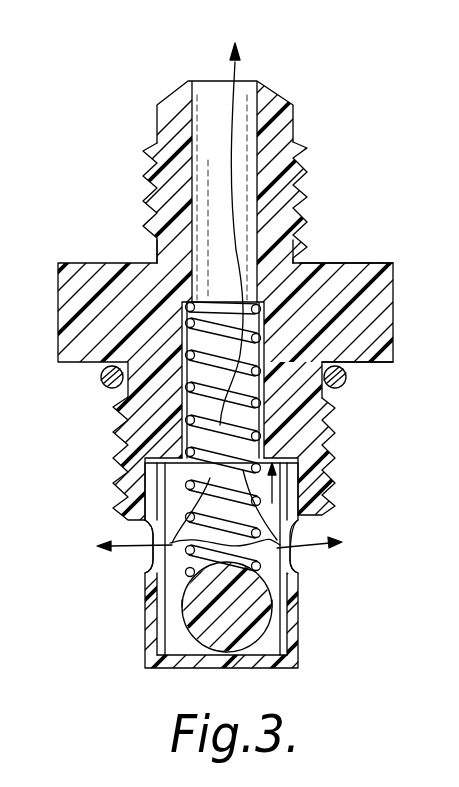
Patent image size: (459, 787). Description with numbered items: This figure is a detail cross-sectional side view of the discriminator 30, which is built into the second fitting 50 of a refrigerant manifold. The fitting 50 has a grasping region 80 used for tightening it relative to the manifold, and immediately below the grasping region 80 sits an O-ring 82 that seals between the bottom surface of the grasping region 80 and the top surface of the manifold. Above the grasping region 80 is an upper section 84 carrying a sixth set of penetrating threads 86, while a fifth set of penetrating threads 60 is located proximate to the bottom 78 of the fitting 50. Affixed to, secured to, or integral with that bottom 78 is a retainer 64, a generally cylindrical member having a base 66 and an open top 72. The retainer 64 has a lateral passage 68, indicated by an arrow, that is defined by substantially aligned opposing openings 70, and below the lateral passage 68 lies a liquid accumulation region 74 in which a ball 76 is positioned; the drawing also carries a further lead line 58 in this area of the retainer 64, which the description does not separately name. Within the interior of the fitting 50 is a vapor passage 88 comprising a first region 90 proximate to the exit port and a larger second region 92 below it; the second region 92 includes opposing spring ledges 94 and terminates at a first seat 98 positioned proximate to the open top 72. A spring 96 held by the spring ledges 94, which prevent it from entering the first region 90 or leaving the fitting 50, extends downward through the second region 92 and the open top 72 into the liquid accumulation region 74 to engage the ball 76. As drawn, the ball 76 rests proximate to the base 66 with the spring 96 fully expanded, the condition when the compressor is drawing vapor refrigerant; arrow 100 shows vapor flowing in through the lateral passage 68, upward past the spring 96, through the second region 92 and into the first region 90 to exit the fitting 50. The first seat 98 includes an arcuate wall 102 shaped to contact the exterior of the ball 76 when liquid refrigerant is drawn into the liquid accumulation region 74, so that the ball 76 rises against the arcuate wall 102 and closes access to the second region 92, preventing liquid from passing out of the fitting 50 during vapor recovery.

The discriminator 30 is at (229, 393).
The second fitting 50 is at (229, 393).
The flow passages 58 is at (310, 547).
The fifth set of penetrating threads 60 is at (323, 507).
The retainer 64 is at (229, 393).
The base 66 is at (200, 670).
The lateral passage 68 is at (272, 483).
The opposing openings 70 is at (147, 561).
The open top 72 is at (316, 500).
The liquid accumulation region 74 is at (280, 653).
The ball 76 is at (193, 605).
The bottom of second fitting 78 is at (132, 474).
The grasping region 80 is at (393, 316).
The O-ring 82 is at (104, 386).
The upper section 84 is at (280, 133).
The sixth set of penetrating threads 86 is at (310, 247).
The vapor passage 88 is at (209, 108).
The first region 90 is at (213, 182).
The second region 92 is at (332, 360).
The opposing spring ledges 94 is at (162, 260).
The spring 96 is at (378, 292).
The first seat 98 is at (290, 445).
The arrow 100 is at (237, 68).
The arcuate wall 102 is at (283, 470).